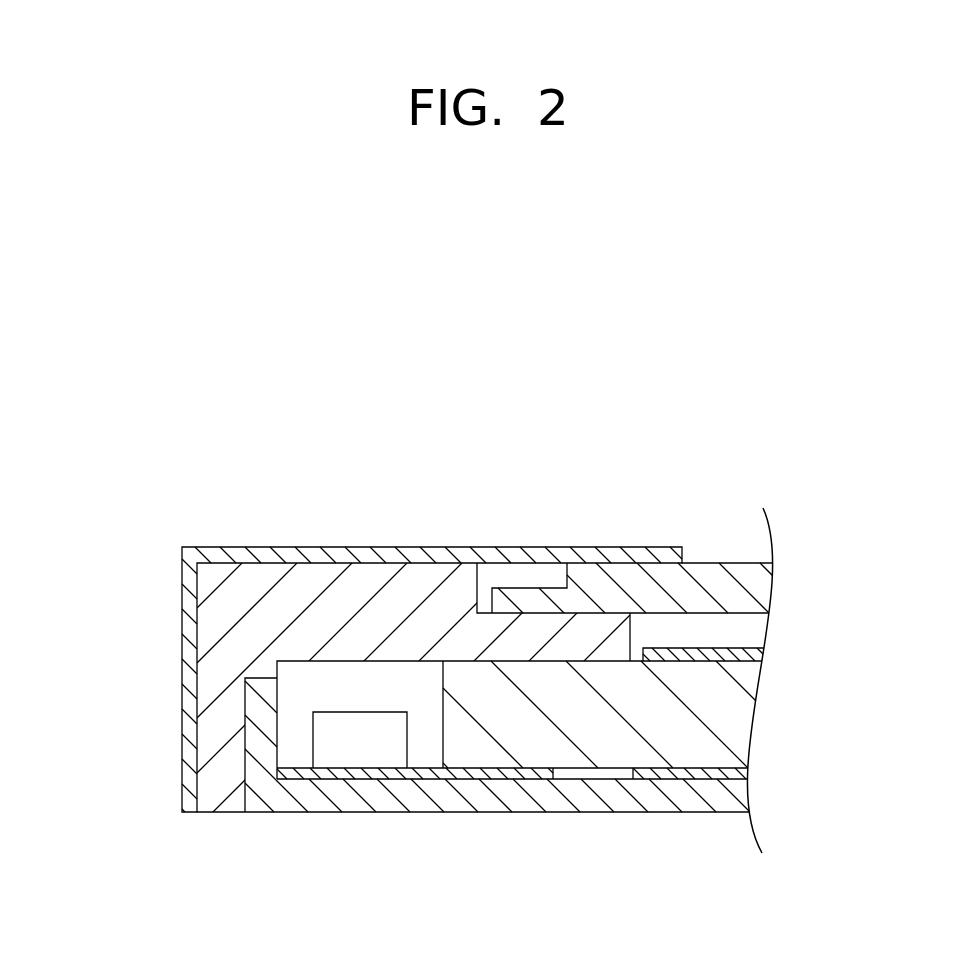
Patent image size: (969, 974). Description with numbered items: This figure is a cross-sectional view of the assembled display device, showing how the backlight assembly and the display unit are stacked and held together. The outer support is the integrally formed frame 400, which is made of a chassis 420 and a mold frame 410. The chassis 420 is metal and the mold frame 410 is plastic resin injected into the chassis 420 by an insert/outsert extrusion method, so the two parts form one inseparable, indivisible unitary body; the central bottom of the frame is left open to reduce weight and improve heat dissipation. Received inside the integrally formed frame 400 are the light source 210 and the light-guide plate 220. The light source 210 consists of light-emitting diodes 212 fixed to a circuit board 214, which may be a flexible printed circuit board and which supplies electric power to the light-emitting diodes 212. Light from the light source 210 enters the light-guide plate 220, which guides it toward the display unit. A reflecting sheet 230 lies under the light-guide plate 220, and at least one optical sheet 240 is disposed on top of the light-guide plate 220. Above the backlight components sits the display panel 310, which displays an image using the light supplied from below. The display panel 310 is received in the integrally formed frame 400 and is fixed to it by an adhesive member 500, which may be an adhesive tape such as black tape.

The adhesive member 500 is at (185, 592).
The integrally formed frame 400 is at (88, 623).
The mold frame 410 is at (260, 639).
The chassis 420 is at (260, 714).
The display panel 310 is at (785, 580).
The optical sheet 240 is at (757, 653).
The light-guide plate 220 is at (737, 717).
The reflecting sheet 230 is at (747, 772).
The light source 210 is at (498, 908).
The light-emitting diodes 212 is at (362, 752).
The circuit board 214 is at (474, 777).